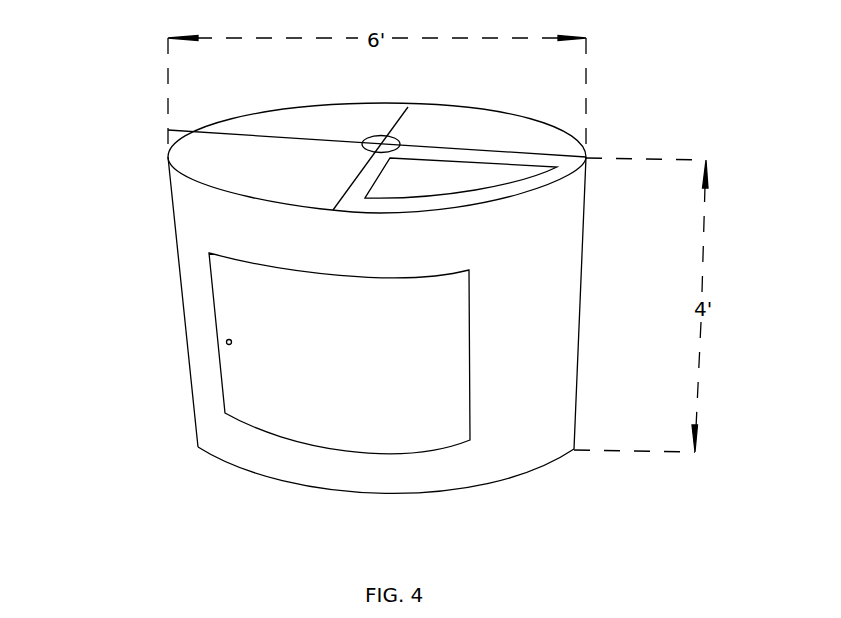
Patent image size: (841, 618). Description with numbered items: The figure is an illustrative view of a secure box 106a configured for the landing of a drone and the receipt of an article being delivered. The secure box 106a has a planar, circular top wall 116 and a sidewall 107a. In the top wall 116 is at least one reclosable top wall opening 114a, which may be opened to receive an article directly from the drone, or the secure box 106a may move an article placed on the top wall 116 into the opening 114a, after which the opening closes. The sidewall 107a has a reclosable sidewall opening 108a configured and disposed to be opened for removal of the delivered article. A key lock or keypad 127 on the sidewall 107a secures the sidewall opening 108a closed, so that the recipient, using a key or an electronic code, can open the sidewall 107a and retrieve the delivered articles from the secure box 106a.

The planar top wall 116 is at (212, 163).
The reclosable top wall opening 114a is at (445, 177).
The secure box 106a is at (202, 220).
The sidewall 107a is at (550, 325).
The reclosable sidewall opening 108a is at (383, 402).
The key lock or keypad 127 is at (228, 345).